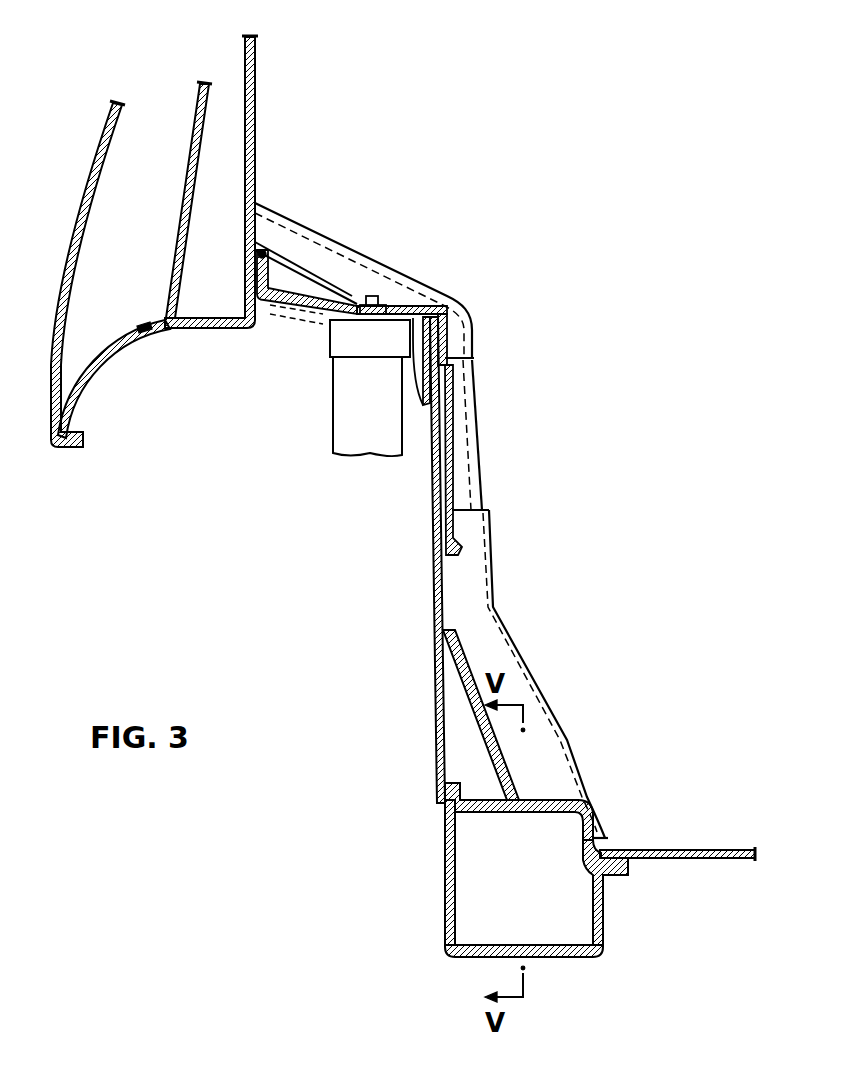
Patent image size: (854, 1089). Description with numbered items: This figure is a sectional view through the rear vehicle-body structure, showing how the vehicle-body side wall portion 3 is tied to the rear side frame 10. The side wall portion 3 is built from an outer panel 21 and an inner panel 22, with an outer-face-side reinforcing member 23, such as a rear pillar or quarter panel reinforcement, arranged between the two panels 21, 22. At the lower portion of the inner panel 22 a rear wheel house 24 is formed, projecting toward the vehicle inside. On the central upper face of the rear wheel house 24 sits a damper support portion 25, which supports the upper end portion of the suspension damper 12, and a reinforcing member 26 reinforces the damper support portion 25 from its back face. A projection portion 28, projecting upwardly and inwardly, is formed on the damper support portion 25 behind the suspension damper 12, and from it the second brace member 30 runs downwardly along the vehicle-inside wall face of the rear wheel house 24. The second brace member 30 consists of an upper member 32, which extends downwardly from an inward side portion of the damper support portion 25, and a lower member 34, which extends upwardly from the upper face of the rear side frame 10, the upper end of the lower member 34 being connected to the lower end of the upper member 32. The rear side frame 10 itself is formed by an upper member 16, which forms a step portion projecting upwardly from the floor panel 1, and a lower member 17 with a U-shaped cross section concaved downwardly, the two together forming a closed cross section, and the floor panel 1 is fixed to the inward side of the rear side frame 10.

The floor panel 1 is at (697, 850).
The vehicle-body side wall portion 3 is at (262, 110).
The rear side frame 10 is at (444, 912).
The suspension damper 12 is at (338, 420).
The upper member 16 is at (493, 814).
The lower member 17 is at (472, 958).
The outer panel 21 is at (96, 168).
The inner panel 22 is at (244, 65).
The outer-face-side reinforcing member 23 is at (178, 220).
The rear wheel house 24 is at (437, 714).
The damper support portion 25 is at (427, 269).
The reinforcing member 26 is at (277, 325).
The projection portion 28 is at (322, 252).
The second brace member 30 is at (491, 484).
The upper member 32 is at (475, 407).
The lower member 34 is at (537, 673).